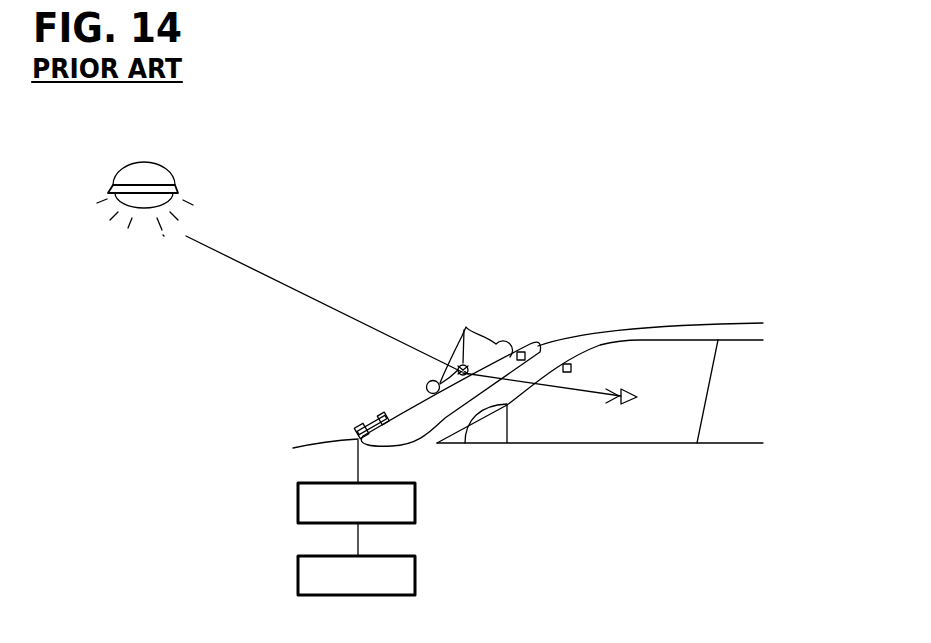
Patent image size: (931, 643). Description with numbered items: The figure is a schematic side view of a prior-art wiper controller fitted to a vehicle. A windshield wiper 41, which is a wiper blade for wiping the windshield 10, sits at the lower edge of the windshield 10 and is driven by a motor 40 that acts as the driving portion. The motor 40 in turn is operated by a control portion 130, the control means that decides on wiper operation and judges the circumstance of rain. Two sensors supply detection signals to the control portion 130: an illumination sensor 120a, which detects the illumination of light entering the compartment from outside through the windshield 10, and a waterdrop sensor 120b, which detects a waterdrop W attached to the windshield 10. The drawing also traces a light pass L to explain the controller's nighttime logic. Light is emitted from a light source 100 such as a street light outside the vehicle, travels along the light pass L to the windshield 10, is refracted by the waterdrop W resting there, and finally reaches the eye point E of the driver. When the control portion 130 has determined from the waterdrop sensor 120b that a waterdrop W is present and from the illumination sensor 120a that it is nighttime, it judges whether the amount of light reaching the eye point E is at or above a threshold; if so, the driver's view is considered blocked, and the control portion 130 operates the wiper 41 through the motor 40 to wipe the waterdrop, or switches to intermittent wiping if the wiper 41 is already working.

The light source 100 is at (160, 172).
The light pass L is at (325, 302).
The windshield 10 is at (417, 417).
The waterdrop W is at (470, 348).
The windshield wiper 41 is at (381, 411).
The eye point E is at (552, 401).
The waterdrop sensor 120b is at (521, 352).
The illumination sensor 120a is at (571, 368).
The motor 40 is at (417, 502).
The control portion 130 is at (417, 575).